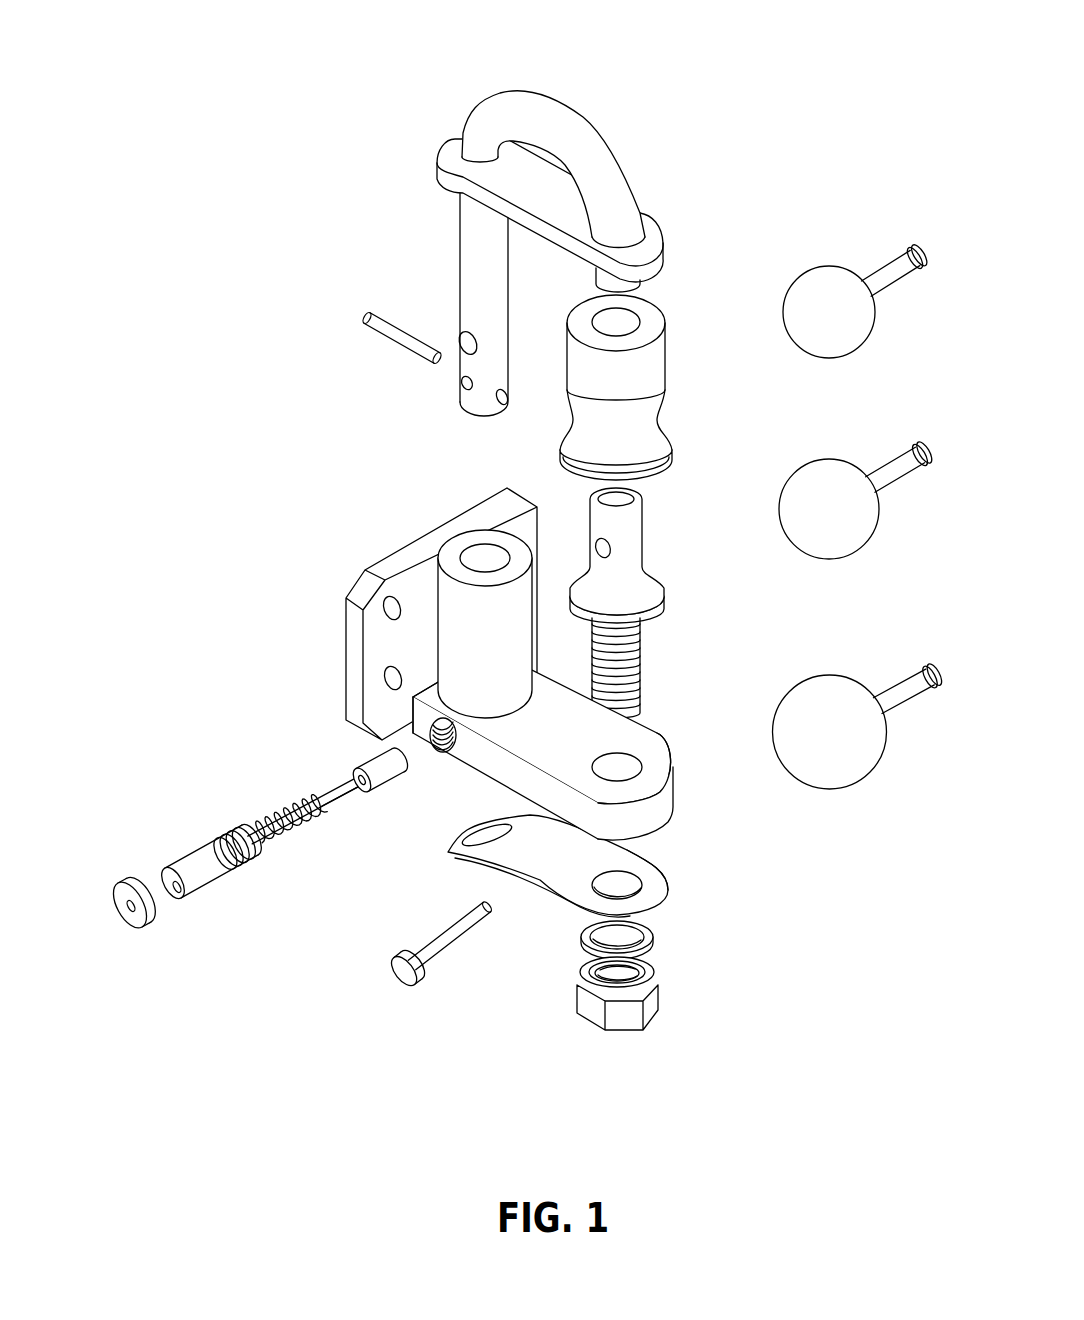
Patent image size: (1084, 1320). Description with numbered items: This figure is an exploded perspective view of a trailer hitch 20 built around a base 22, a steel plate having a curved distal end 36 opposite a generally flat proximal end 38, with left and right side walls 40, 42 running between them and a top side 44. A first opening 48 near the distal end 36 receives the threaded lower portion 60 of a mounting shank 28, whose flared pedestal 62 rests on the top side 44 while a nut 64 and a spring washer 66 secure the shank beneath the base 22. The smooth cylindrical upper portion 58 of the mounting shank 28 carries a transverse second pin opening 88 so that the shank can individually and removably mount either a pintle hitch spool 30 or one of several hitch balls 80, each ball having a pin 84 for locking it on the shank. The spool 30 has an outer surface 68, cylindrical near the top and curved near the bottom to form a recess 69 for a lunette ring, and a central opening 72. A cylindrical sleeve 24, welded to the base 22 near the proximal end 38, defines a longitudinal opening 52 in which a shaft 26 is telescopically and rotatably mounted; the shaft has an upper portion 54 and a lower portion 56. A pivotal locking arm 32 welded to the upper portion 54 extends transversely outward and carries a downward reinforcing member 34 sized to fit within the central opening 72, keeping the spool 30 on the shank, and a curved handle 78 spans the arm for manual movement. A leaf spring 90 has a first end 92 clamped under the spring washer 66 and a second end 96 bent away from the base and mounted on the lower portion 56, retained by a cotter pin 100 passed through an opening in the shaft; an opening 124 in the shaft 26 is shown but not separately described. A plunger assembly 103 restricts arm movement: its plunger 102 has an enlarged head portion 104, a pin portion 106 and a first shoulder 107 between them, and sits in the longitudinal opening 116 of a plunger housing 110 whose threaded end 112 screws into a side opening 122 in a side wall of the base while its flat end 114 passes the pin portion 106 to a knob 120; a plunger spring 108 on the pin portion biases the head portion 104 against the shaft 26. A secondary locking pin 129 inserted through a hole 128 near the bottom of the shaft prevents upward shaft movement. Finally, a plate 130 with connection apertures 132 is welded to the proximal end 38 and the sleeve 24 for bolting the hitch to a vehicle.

The trailer hitch 20 is at (247, 472).
The base 22 is at (650, 738).
The sleeve 24 is at (455, 548).
The shaft 26 is at (460, 235).
The mounting shank 28 is at (650, 520).
The pintle hitch spool 30 is at (660, 350).
The pivotal locking arm 32 is at (650, 217).
The reinforcing member 34 is at (637, 283).
The curved distal end 36 is at (672, 805).
The proximal end 38 is at (410, 712).
The left side wall 40 is at (500, 768).
The right side wall 42 is at (648, 735).
The top side 44 is at (556, 746).
The first opening 48 is at (648, 755).
The longitudinal opening 52 is at (485, 558).
The upper portion 54 is at (460, 227).
The lower portion 56 is at (510, 397).
The upper portion 58 is at (645, 540).
The lower portion 60 is at (645, 648).
The flared pedestal 62 is at (655, 573).
The nut 64 is at (625, 1040).
The spring washer 66 is at (655, 940).
The outer surface 68 is at (633, 391).
The recess 69 is at (680, 423).
The central opening 72 is at (635, 312).
The curved handle 78 is at (568, 130).
The hitch balls 80 is at (832, 266).
The pins 84 is at (918, 250).
The second pin opening 88 is at (598, 548).
The leaf spring 90 is at (665, 882).
The first end 92 is at (660, 862).
The second end 96 is at (452, 860).
The cotter pin 100 is at (367, 325).
The plunger 102 is at (360, 772).
The plunger assembly 103 is at (245, 790).
The head portion 104 is at (380, 750).
The pin portion 106 is at (333, 803).
The first shoulder 107 is at (367, 790).
The plunger spring 108 is at (300, 827).
The plunger housing 110 is at (213, 887).
The threaded end 112 is at (257, 853).
The flat end 114 is at (188, 900).
The longitudinal opening 116 is at (162, 873).
The knob 120 is at (135, 920).
The side opening 122 is at (443, 737).
The hole 124 is at (468, 343).
The hole 128 is at (465, 384).
The secondary locking pin 129 is at (463, 927).
The plate 130 is at (365, 572).
The connection apertures 132 is at (385, 608).